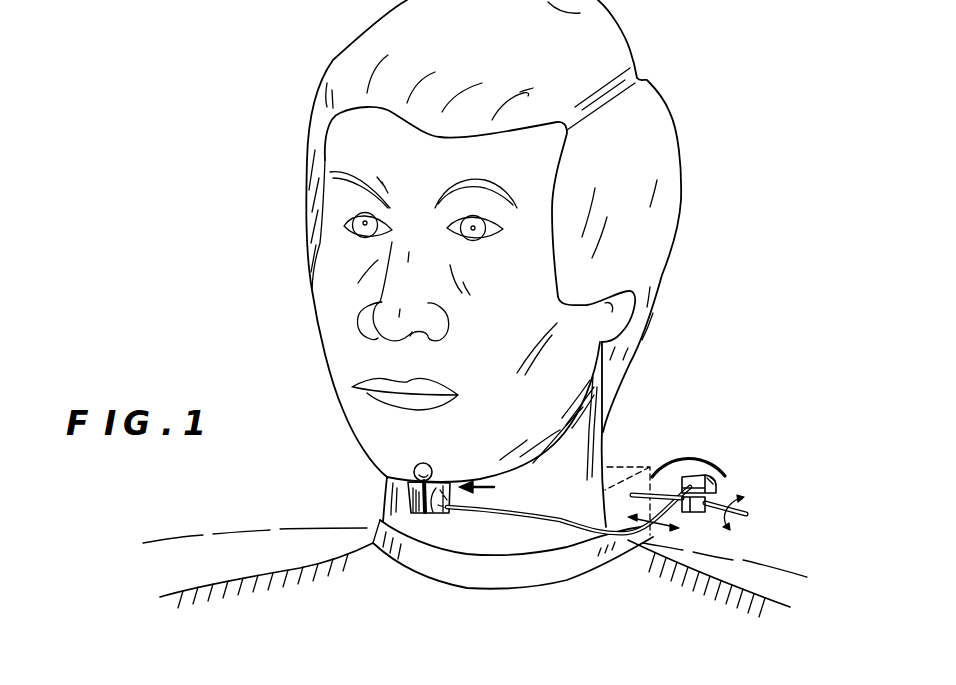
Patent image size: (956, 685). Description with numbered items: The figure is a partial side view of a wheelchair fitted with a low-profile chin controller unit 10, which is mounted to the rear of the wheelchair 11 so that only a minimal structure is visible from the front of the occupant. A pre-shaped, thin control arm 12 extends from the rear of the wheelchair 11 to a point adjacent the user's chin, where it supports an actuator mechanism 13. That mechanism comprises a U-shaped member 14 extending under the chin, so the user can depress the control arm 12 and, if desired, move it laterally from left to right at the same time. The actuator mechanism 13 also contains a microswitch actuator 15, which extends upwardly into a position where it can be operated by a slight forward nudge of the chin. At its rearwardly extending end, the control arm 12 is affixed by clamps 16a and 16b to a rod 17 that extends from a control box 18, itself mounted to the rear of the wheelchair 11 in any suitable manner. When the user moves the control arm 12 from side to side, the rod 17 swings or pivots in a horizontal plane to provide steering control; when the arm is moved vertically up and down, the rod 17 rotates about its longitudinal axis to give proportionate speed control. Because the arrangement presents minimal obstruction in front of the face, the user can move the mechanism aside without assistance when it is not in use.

The chin controller unit 10 is at (740, 453).
The wheelchair 11 is at (769, 562).
The control arm 12 is at (537, 515).
The actuator mechanism 13 is at (490, 486).
The U-shaped member 14 is at (452, 483).
The microswitch actuator 15 is at (430, 467).
The clamp 16a is at (717, 487).
The clamp 16b is at (685, 513).
The rod 17 is at (749, 510).
The control box 18 is at (610, 460).